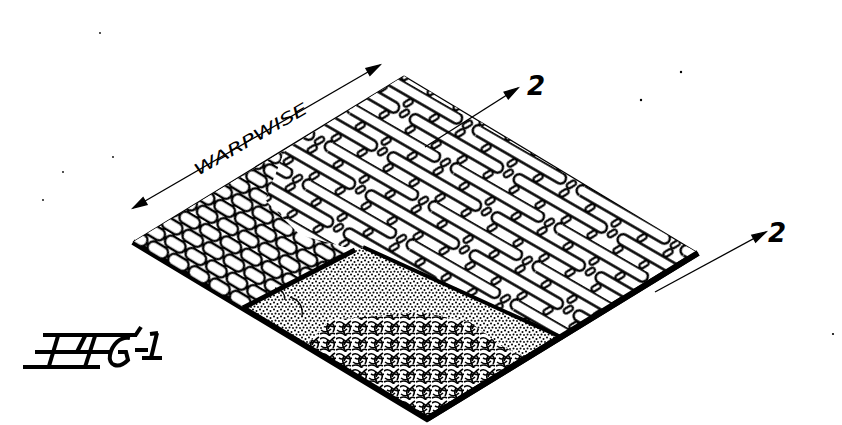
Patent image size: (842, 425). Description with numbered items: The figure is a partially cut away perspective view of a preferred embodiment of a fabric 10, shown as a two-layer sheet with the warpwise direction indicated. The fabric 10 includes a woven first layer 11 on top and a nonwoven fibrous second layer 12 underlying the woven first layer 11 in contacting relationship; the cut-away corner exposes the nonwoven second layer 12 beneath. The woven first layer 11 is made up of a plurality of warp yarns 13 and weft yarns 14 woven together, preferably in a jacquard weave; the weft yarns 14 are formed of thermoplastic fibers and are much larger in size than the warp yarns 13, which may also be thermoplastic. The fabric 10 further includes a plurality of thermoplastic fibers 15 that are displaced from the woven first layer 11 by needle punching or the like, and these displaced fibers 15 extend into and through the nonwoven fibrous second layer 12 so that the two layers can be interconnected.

The fabric 10 is at (414, 47).
The woven first layer 11 is at (498, 180).
The nonwoven fibrous second layer 12 is at (356, 372).
The warp yarns 13 is at (410, 83).
The weft yarns 14 is at (664, 286).
The thermoplastic fibers 15 is at (282, 327).